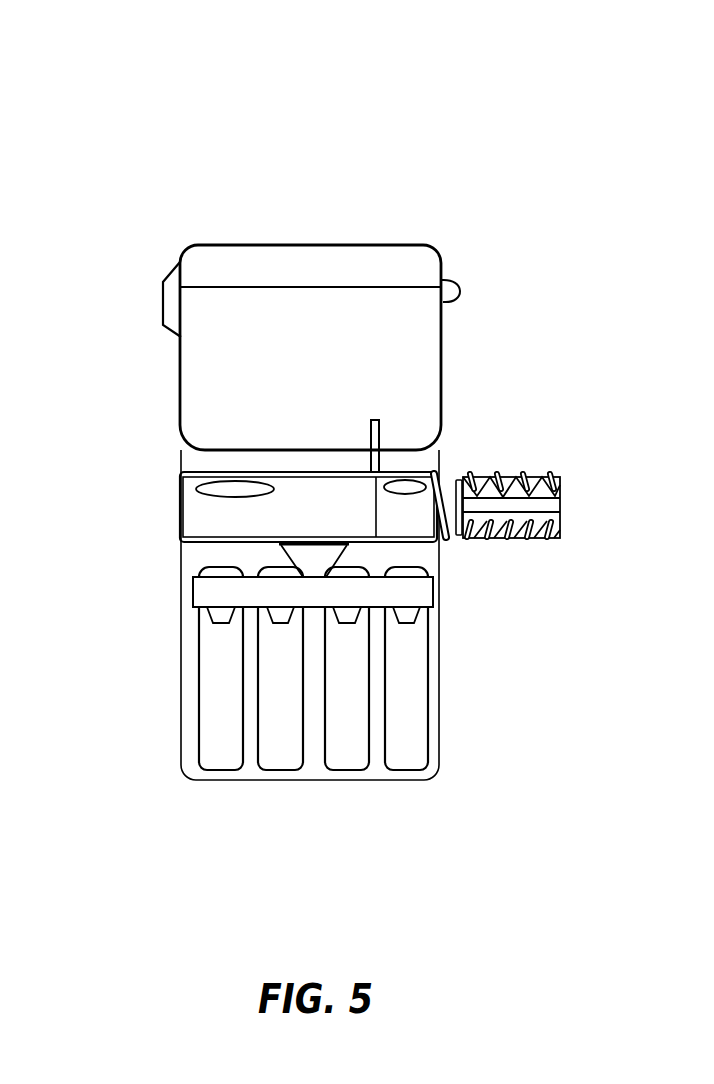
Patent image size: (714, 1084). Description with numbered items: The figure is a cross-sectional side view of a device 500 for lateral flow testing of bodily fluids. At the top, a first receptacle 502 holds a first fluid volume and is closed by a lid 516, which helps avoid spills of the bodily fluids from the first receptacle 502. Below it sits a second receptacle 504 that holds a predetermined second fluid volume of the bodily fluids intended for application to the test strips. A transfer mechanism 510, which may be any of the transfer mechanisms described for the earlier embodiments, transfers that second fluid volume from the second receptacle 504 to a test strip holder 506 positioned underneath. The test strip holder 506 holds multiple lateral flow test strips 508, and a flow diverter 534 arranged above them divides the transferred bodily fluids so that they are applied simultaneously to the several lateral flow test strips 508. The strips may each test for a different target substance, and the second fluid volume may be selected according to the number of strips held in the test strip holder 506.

The device 500 is at (186, 90).
The first receptacle 502 is at (178, 401).
The second receptacle 504 is at (193, 523).
The test strip holder 506 is at (177, 655).
The lateral flow test strips 508 is at (223, 772).
The transfer mechanism 510 is at (150, 487).
The lid 516 is at (300, 245).
The flow diverter 534 is at (433, 595).